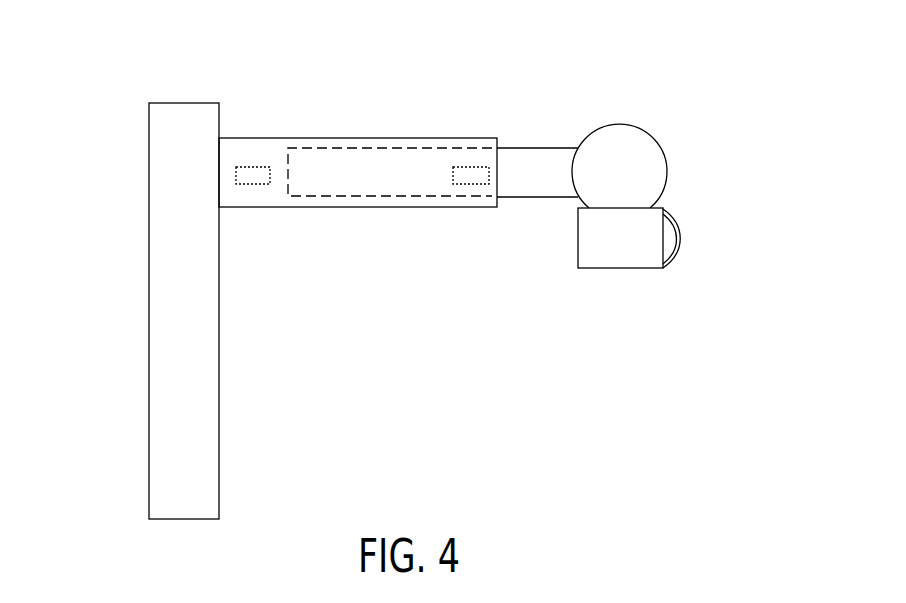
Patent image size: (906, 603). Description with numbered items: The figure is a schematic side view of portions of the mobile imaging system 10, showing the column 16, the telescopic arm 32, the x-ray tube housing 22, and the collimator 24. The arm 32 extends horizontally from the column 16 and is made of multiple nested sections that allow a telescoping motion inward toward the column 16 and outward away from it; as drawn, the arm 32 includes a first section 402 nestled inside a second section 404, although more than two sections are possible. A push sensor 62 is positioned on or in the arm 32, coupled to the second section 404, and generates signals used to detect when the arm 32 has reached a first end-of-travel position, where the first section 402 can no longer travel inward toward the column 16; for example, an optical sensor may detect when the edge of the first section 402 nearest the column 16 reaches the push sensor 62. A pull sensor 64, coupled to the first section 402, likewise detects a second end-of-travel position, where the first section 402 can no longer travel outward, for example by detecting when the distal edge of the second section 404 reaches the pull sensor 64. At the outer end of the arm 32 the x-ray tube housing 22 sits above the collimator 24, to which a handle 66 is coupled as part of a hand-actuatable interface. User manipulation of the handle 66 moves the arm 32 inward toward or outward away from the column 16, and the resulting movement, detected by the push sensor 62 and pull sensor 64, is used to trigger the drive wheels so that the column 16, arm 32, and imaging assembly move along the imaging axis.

The mobile imaging system 10 is at (653, 55).
The column 16 is at (149, 190).
The x-ray tube housing 22 is at (631, 181).
The collimator 24 is at (631, 251).
The arm 32 is at (307, 138).
The push sensor 62 is at (253, 185).
The pull sensor 64 is at (470, 185).
The handle 66 is at (682, 245).
The first section 402 is at (503, 148).
The second section 404 is at (355, 138).